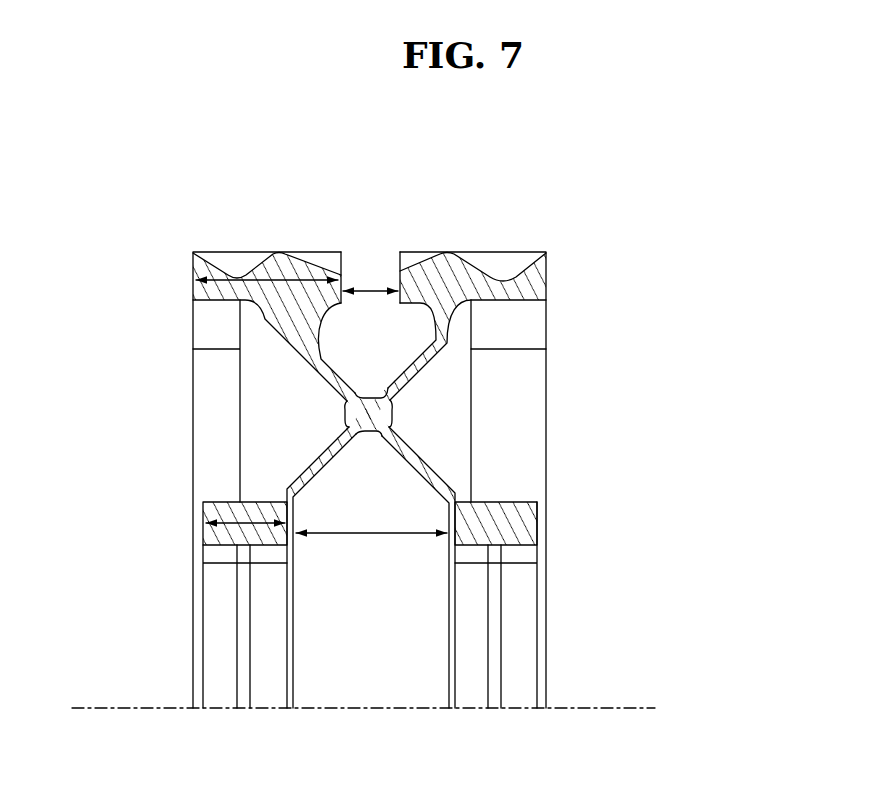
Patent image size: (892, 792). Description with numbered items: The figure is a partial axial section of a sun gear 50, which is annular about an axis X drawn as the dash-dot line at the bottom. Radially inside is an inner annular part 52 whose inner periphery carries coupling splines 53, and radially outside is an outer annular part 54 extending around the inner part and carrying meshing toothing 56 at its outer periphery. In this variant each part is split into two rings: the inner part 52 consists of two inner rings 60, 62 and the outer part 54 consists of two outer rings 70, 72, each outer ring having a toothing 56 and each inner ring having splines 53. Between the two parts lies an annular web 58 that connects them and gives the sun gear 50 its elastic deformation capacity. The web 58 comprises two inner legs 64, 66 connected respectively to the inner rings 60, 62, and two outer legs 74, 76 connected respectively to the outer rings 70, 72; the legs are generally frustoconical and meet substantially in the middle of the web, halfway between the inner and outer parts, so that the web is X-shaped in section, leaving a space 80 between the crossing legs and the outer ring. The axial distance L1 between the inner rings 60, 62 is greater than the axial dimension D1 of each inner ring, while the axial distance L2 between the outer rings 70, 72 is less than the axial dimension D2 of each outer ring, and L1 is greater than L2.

The sun gear 50 is at (663, 396).
The inner annular part 52 is at (563, 522).
The coupling splines 53 is at (222, 633).
The outer annular part 54 is at (571, 255).
The meshing toothing 56 is at (327, 262).
The annular web 58 is at (425, 420).
The inner ring 60 is at (213, 537).
The inner ring 62 is at (538, 512).
The inner leg 64 is at (292, 483).
The inner leg 66 is at (440, 487).
The outer ring 70 is at (228, 292).
The outer ring 72 is at (545, 280).
The outer leg 74 is at (262, 362).
The outer leg 76 is at (443, 353).
The gap 80 is at (468, 390).
The axial dimension of inner rings D1 is at (243, 505).
The axial dimension of outer rings D2 is at (268, 272).
The axial distance between inner rings L1 is at (371, 520).
The axial distance between outer rings L2 is at (373, 290).
The axis X is at (618, 708).